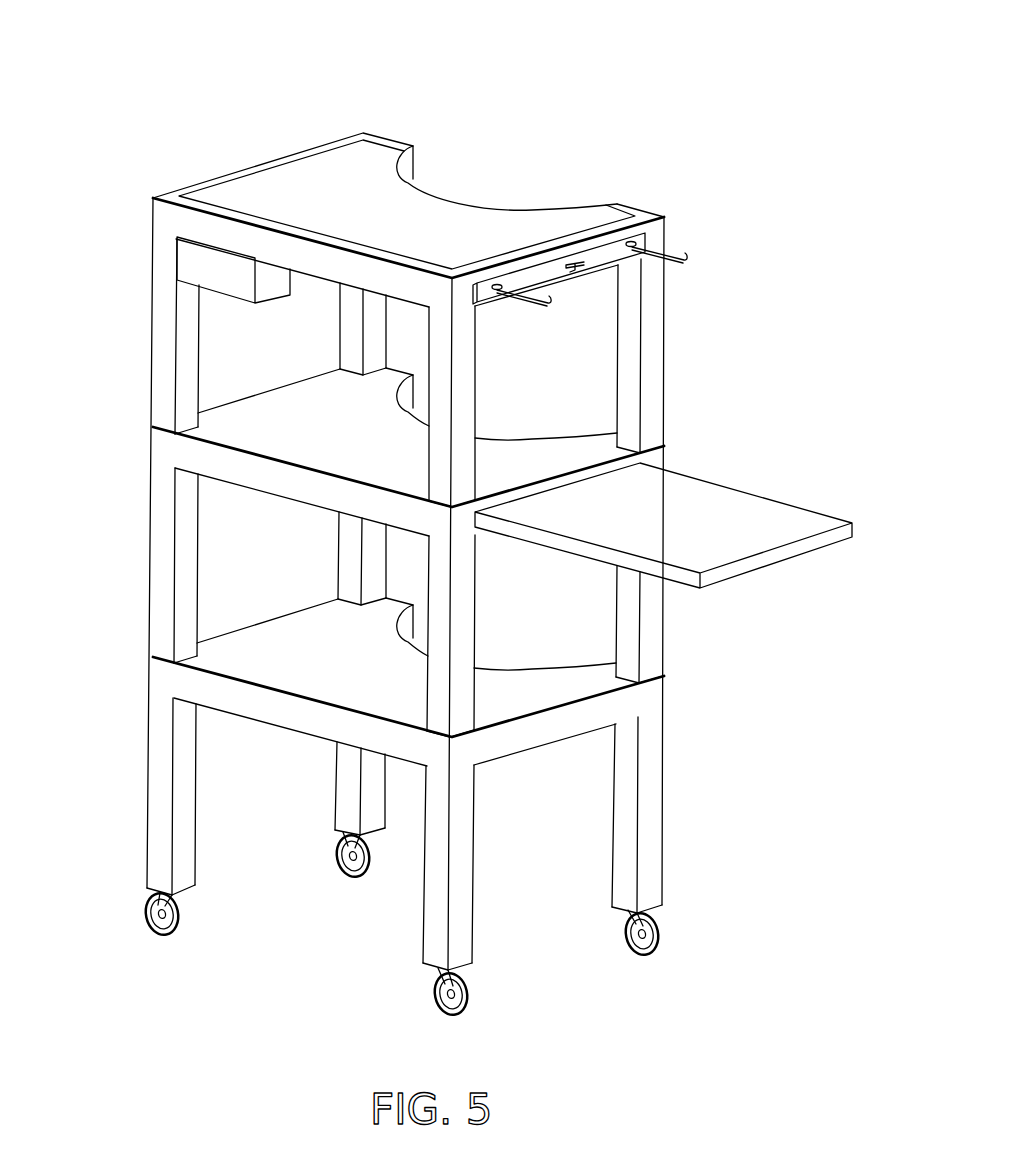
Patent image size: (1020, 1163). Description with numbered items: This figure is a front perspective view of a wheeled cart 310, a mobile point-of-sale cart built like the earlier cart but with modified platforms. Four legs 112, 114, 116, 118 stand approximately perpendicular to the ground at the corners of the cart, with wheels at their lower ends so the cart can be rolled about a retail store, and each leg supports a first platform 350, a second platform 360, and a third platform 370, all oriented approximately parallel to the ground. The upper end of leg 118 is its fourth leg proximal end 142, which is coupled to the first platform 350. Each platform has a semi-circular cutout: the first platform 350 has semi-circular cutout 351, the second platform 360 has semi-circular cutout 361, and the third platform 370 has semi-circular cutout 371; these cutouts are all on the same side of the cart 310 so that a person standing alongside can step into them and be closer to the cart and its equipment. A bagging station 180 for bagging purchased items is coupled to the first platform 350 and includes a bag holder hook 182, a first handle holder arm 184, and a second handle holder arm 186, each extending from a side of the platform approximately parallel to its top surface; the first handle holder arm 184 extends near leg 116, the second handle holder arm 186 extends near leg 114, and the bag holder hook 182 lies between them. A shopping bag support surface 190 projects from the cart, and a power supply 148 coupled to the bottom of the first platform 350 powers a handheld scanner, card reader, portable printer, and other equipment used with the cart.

The wheeled cart 310 is at (450, 512).
The first platform 350 is at (362, 189).
The semi-circular cutout 351 is at (533, 210).
The fourth leg proximal end 142 is at (163, 228).
The power supply 148 is at (220, 282).
The leg 112 is at (336, 309).
The leg 114 is at (652, 805).
The leg 116 is at (428, 880).
The leg 118 is at (150, 522).
The second platform 360 is at (373, 510).
The semi-circular cutout 361 is at (548, 444).
The third platform 370 is at (373, 702).
The semi-circular cutout 371 is at (518, 666).
The bagging station 180 is at (627, 250).
The bag holder hook 182 is at (572, 268).
The first handle holder arm 184 is at (520, 300).
The second handle holder arm 186 is at (673, 257).
The shopping bag support surface 190 is at (706, 492).